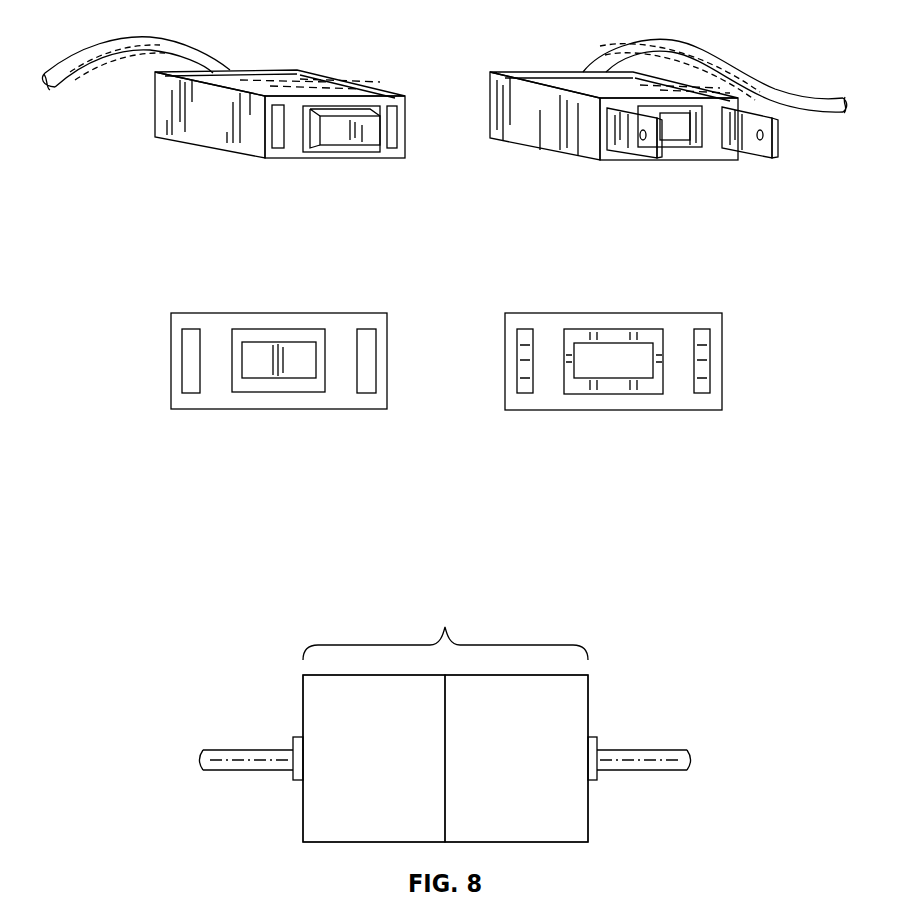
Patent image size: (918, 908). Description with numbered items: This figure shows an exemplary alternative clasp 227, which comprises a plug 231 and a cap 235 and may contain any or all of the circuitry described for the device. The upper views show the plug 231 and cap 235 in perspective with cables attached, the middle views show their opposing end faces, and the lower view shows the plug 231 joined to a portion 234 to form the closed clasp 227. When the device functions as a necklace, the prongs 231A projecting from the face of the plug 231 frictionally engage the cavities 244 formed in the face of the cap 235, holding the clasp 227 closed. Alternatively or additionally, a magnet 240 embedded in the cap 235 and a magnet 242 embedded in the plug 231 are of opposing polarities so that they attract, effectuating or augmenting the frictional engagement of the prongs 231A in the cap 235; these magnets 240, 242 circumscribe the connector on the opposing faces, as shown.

The cap 235 is at (308, 90).
The cavities 244 is at (400, 128).
The magnet 240 is at (277, 393).
The plug 231 is at (570, 80).
The prongs 231A is at (780, 127).
The magnet 242 is at (597, 394).
The clasp 227 is at (445, 722).
The first connector portion 234 is at (393, 770).